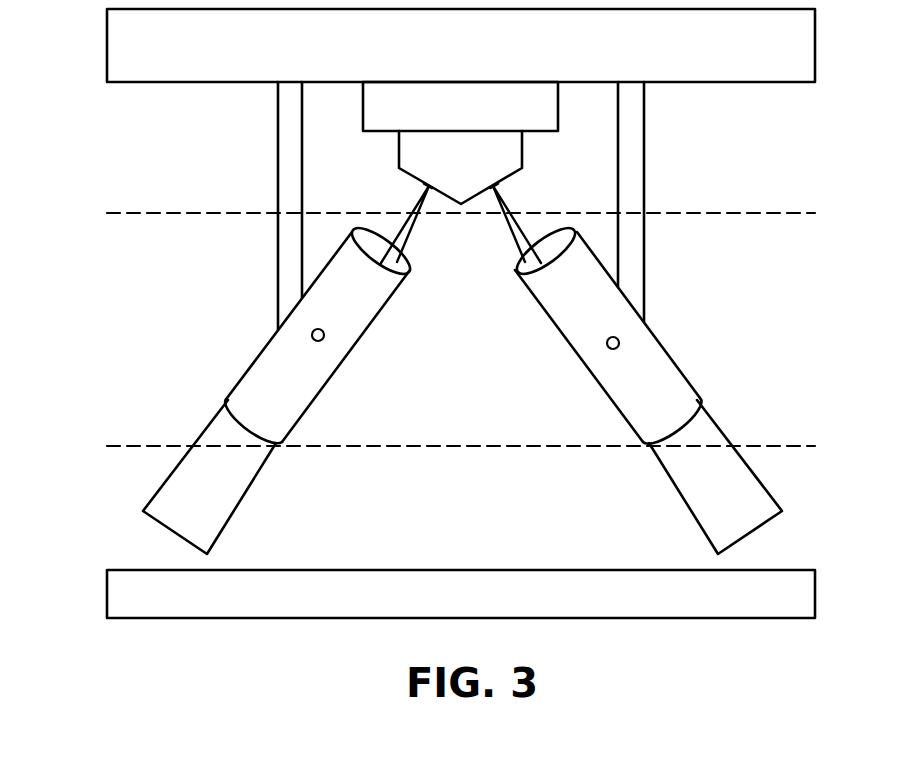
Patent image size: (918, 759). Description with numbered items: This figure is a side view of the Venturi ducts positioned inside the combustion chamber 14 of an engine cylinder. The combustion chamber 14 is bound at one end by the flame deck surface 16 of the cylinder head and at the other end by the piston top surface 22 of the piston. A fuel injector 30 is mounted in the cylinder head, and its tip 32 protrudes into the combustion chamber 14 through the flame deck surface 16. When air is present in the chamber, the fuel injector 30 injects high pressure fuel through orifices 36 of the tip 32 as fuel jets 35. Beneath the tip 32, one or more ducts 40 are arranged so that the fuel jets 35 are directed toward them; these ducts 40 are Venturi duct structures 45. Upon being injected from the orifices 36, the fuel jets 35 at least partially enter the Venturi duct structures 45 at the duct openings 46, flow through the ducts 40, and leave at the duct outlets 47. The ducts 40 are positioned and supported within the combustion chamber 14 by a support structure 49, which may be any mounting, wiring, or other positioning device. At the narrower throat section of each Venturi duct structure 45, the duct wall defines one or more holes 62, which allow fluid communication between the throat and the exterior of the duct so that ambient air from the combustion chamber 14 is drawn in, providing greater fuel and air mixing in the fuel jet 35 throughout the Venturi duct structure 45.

The combustion chamber 14 is at (136, 155).
The flame deck surface 16 is at (693, 85).
The piston top surface 22 is at (448, 570).
The fuel injector 30 is at (448, 107).
The tip 32 is at (463, 157).
The fuel jets 35 is at (198, 515).
The orifices 36 is at (428, 186).
The ducts 40 is at (768, 302).
The Venturi duct structures 45 is at (315, 385).
The duct openings 46 is at (400, 262).
The duct outlets 47 is at (248, 427).
The support structure 49 is at (277, 181).
The holes 62 is at (314, 330).